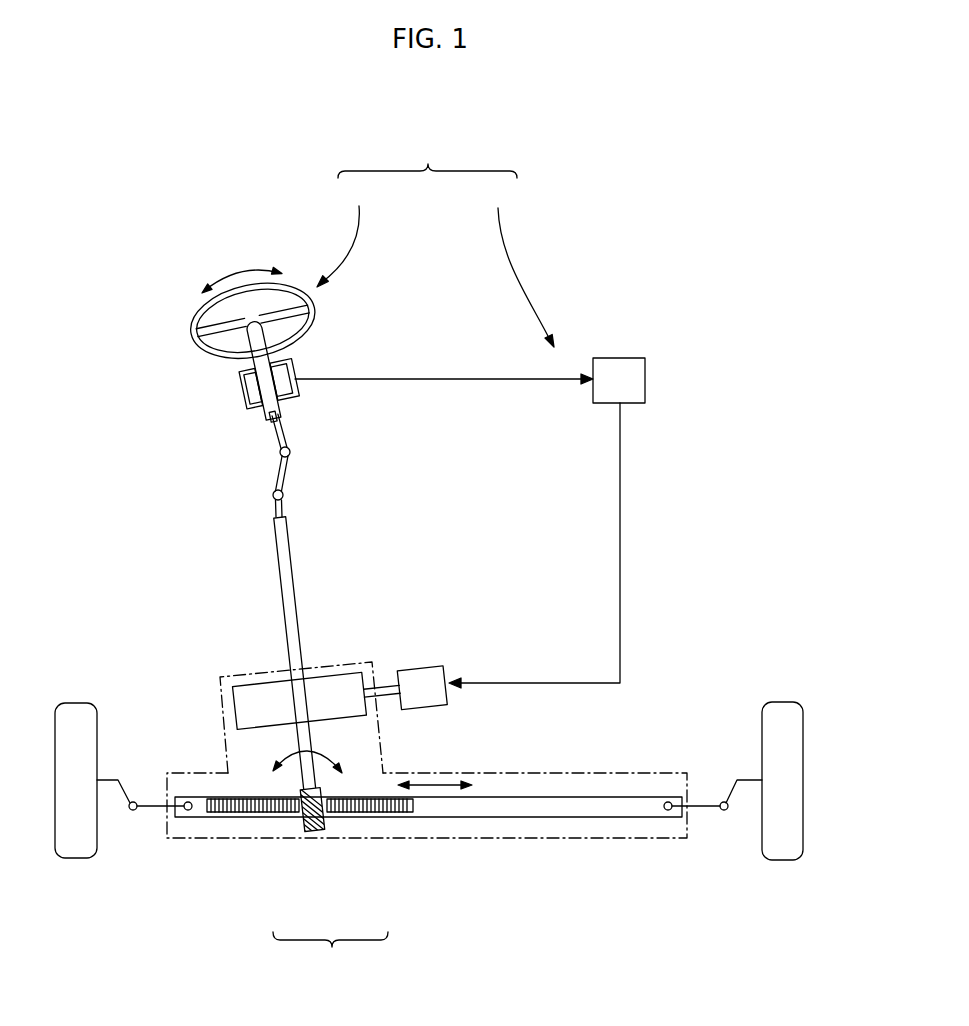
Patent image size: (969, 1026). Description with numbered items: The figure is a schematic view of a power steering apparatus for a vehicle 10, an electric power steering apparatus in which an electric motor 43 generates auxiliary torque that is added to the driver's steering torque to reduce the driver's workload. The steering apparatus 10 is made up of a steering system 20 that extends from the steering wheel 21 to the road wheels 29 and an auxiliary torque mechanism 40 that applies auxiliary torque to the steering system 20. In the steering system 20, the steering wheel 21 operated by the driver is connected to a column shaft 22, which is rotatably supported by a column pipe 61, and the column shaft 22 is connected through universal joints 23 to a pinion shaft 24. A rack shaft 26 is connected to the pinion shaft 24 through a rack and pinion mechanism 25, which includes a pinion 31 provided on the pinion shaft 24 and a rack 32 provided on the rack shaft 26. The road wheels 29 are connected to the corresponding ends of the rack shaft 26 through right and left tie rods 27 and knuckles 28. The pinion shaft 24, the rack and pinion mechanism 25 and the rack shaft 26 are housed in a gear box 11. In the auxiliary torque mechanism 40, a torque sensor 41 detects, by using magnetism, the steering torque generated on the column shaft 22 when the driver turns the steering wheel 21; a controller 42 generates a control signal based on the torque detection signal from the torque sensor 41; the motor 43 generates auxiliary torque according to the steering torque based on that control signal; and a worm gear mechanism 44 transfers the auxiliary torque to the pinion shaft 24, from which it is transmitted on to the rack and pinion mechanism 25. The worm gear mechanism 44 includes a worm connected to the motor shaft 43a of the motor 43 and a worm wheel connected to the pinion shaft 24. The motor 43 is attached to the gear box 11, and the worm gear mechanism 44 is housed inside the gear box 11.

The power steering apparatus for a vehicle 10 is at (427, 156).
The gear box 11 is at (633, 770).
The steering system 20 is at (345, 232).
The steering wheel 21 is at (197, 337).
The column shaft 22 is at (247, 383).
The universal joints 23 is at (276, 455).
The pinion shaft 24 is at (287, 597).
The rack and pinion mechanism 25 is at (330, 955).
The rack shaft 26 is at (512, 805).
The tie rods 27 is at (157, 810).
The knuckles 28 is at (123, 793).
The road wheels 29 is at (73, 845).
The pinion 31 is at (312, 833).
The rack 32 is at (390, 812).
The auxiliary torque mechanism 40 is at (517, 262).
The torque sensor 41 is at (293, 387).
The controller 42 is at (620, 370).
The electric motor 43 is at (430, 678).
The motor shaft 43a is at (383, 688).
The worm gear mechanism 44 is at (338, 687).
The column pipe 61 is at (247, 402).